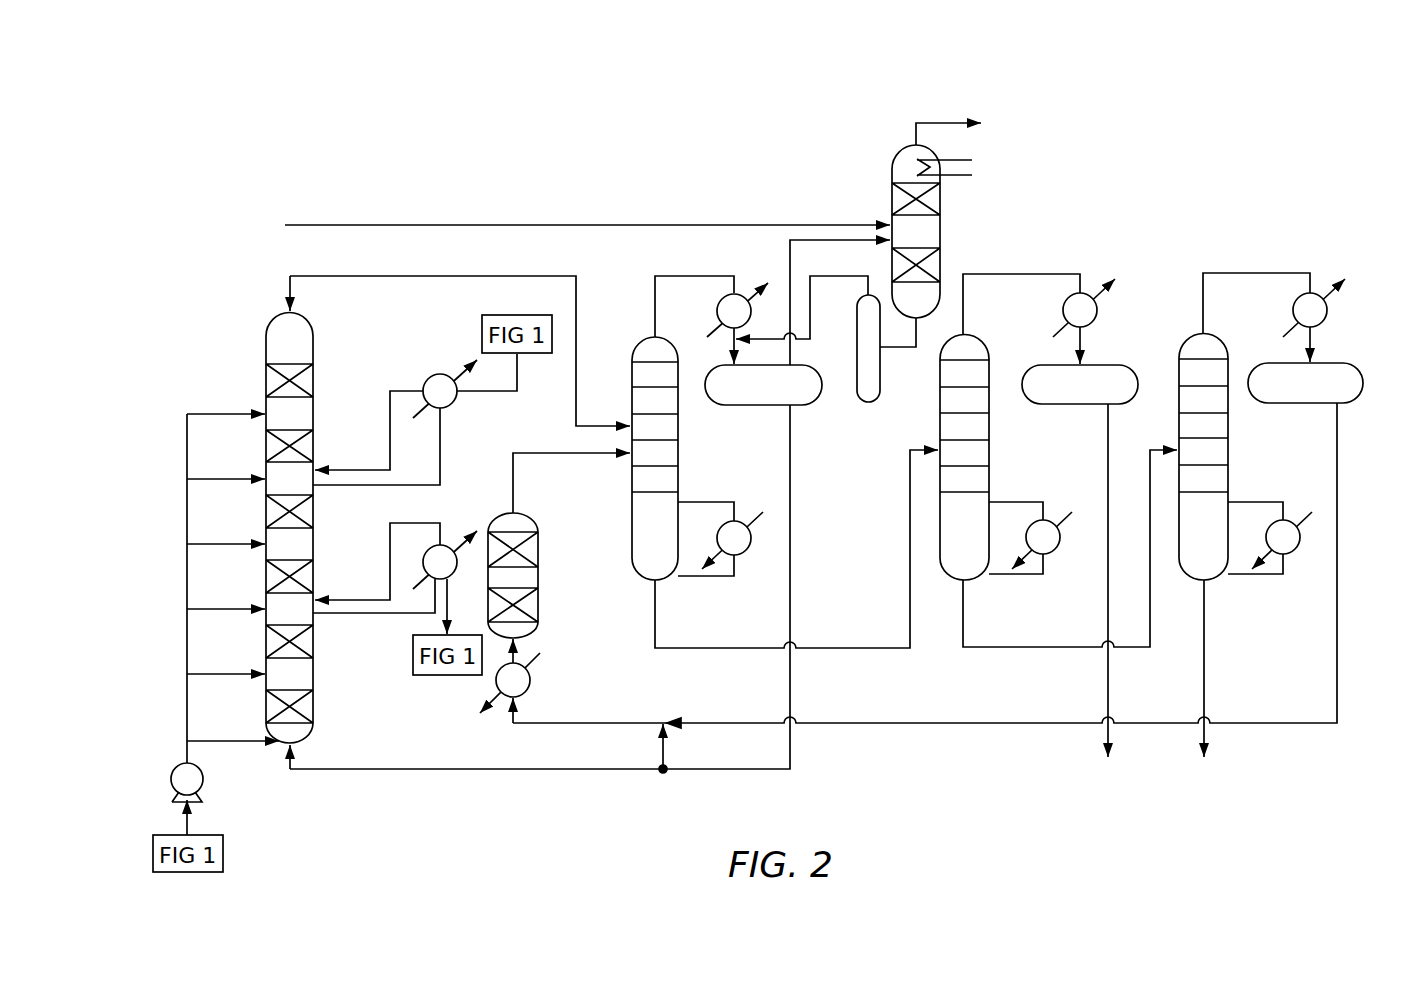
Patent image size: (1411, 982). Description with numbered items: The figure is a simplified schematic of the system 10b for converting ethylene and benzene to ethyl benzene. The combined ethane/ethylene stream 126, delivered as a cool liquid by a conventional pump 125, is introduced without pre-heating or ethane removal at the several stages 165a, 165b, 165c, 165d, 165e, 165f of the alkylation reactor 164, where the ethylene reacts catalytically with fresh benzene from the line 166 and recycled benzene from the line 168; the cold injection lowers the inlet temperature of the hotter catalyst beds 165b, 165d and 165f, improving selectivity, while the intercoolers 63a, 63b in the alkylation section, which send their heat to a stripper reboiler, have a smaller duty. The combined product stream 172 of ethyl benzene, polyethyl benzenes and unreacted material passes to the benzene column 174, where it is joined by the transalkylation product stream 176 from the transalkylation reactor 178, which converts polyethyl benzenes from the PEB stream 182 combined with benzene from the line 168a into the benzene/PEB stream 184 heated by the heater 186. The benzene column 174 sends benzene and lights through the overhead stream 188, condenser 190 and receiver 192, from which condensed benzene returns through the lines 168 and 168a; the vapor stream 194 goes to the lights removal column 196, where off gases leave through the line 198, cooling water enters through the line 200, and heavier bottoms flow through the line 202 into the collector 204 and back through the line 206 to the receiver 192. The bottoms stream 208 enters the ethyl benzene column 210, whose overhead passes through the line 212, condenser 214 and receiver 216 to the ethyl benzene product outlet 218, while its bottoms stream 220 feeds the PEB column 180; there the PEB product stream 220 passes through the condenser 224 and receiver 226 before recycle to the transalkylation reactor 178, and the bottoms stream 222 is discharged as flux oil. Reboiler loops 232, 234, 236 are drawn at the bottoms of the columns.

The system 10b is at (1308, 107).
The intercooler 63a is at (442, 371).
The intercooler 63b is at (443, 545).
The pump 125 is at (170, 779).
The combined ethane/ethylene stream 126 is at (185, 752).
The alkylation reactor 164 is at (317, 351).
The stage 165a is at (303, 690).
The catalyst bed 165b is at (295, 622).
The stage 165c is at (305, 560).
The catalyst bed 165d is at (295, 493).
The stage 165e is at (303, 428).
The catalyst bed 165f is at (272, 345).
The line 166 is at (457, 223).
The line 168 is at (437, 768).
The line 168a is at (660, 755).
The combined product stream 172 is at (427, 275).
The benzene column 174 is at (628, 368).
The transalkylation product stream 176 is at (562, 455).
The transalkylation reactor 178 is at (539, 577).
The PEB column 180 is at (1178, 365).
The PEB stream 182 is at (923, 721).
The combined benzene/PEB stream 184 is at (637, 721).
The heater 186 is at (531, 681).
The overhead stream 188 is at (698, 276).
The condenser 190 is at (717, 308).
The receiver 192 is at (745, 406).
The vapor stream 194 is at (787, 277).
The lights removal column 196 is at (942, 233).
The line 198 is at (942, 122).
The line 200 is at (955, 160).
The line 202 is at (905, 352).
The collector 204 is at (855, 382).
The line 206 is at (822, 273).
The bottoms stream 208 is at (705, 647).
The ethyl benzene column 210 is at (990, 420).
The line 212 is at (1043, 274).
The condenser 214 is at (1063, 308).
The receiver 216 is at (1078, 406).
The ethyl benzene product outlet 218 is at (1105, 738).
The bottoms stream 220 is at (1253, 273).
The bottoms stream 222 is at (1206, 655).
The condenser 224 is at (1292, 308).
The receiver 226 is at (1348, 362).
The reboiler 232 is at (743, 516).
The reboiler 234 is at (1052, 517).
The reboiler 236 is at (1290, 515).